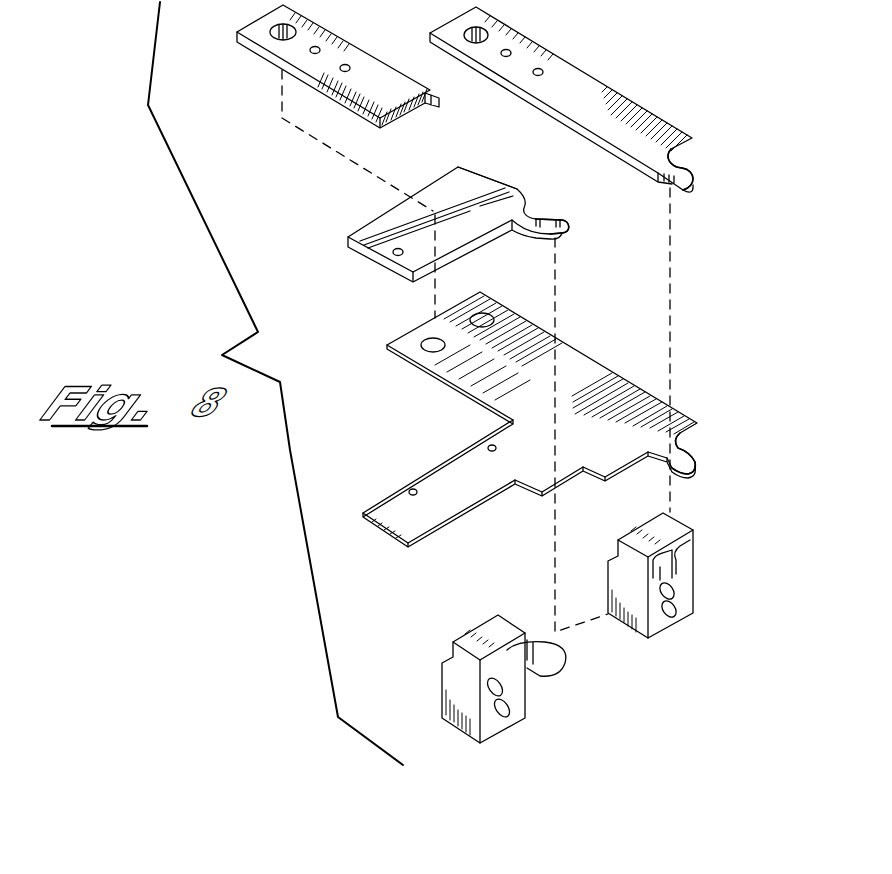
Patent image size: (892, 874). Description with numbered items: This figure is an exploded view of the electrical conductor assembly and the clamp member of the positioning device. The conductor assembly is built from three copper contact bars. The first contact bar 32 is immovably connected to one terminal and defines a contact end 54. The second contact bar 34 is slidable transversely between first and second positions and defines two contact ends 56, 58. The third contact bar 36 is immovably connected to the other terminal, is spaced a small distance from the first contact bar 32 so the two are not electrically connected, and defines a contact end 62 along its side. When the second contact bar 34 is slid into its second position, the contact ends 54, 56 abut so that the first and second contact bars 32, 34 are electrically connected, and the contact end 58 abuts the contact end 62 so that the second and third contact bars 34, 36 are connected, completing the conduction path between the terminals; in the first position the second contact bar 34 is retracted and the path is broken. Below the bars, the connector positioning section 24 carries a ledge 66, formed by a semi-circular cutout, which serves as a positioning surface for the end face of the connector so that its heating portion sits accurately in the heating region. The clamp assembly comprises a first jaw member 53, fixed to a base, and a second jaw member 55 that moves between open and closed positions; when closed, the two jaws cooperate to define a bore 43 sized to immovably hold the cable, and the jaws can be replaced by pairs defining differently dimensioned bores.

The connector positioning section 24 is at (575, 353).
The first electrically conductive contact bar 32 is at (603, 93).
The second electrically conductive contact bar 34 is at (368, 227).
The third electrically conductive contact bar 36 is at (273, 45).
The bore 43 is at (668, 573).
The first jaw member 53 is at (690, 548).
The contact end 54 is at (673, 190).
The second jaw member 55 is at (525, 687).
The contact end 56 is at (576, 229).
The contact end 58 is at (457, 167).
The contact end 62 is at (428, 107).
The ledge 66 is at (692, 455).